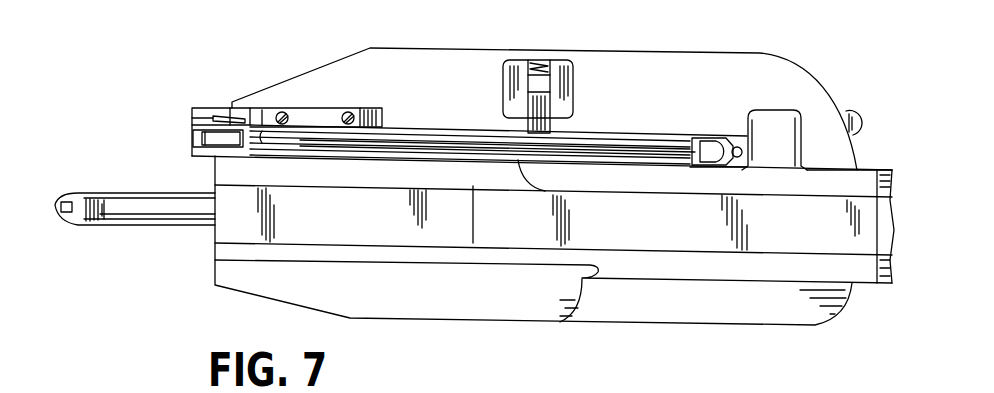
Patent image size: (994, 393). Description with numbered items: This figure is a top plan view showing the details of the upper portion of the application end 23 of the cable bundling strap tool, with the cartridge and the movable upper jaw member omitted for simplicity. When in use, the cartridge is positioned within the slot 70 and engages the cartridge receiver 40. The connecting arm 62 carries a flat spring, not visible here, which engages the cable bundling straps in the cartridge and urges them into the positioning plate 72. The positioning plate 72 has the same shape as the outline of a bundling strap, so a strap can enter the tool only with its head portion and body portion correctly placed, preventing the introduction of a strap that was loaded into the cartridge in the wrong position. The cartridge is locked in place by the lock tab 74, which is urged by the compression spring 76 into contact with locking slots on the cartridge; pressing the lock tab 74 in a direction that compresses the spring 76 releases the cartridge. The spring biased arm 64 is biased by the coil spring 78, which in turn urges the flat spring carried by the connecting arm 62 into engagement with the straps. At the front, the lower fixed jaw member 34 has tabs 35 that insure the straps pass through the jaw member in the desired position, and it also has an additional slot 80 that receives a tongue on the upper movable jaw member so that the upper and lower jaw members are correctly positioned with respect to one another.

The application end 23 is at (242, 288).
The lower fixed jaw member 34 is at (144, 226).
The tabs 35 is at (162, 215).
The slot 80 is at (61, 204).
The coil spring 78 is at (207, 108).
The spring biased arm 64 is at (193, 140).
The cartridge receiver 40 is at (330, 115).
The slot 70 is at (634, 139).
The connecting arm 62 is at (662, 148).
The positioning plate 72 is at (710, 141).
The lock tab 74 is at (550, 113).
The compression spring 76 is at (538, 62).